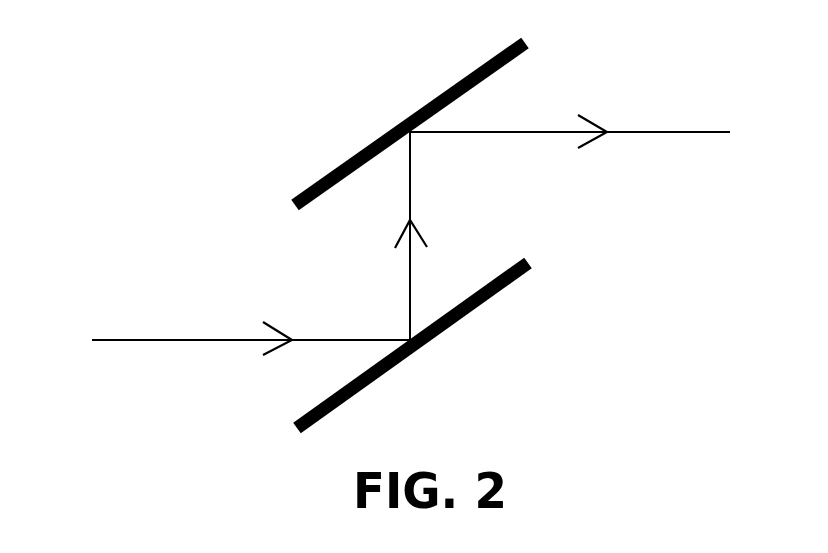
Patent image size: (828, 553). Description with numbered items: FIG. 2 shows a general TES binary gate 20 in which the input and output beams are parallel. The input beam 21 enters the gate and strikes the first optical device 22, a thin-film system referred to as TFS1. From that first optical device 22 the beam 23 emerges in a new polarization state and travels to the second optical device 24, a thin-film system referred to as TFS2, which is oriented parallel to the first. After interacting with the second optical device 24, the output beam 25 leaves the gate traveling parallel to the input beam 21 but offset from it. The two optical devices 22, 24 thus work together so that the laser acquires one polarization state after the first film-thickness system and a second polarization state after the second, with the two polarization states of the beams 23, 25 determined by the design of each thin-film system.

The optical beam steering arrangement 20 is at (124, 42).
The input beam 21 is at (128, 340).
The optical device (thin film system TFS1) 22 is at (437, 335).
The laser beam after TFS1 23 is at (410, 175).
The optical device (thin film system TFS2) 24 is at (408, 118).
The output beam 25 is at (643, 132).